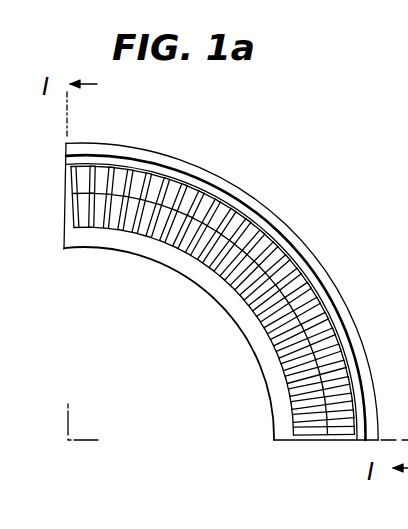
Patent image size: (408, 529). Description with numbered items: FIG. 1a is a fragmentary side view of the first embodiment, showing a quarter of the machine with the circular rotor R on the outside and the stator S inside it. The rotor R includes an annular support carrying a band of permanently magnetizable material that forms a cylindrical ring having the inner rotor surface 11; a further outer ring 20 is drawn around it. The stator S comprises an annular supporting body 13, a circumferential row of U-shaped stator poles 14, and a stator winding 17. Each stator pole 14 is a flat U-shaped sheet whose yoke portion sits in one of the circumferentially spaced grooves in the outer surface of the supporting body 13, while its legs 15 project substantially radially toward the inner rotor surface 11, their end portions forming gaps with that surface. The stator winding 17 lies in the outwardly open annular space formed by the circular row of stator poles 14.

The rotor surface 11 is at (348, 335).
The annular supporting body 13 is at (136, 262).
The U-shaped stator poles 14 is at (218, 279).
The legs 15 is at (258, 225).
The stator winding 17 is at (185, 178).
The outer ring 20 is at (324, 278).
The rotor R is at (306, 233).
The stator S is at (266, 372).